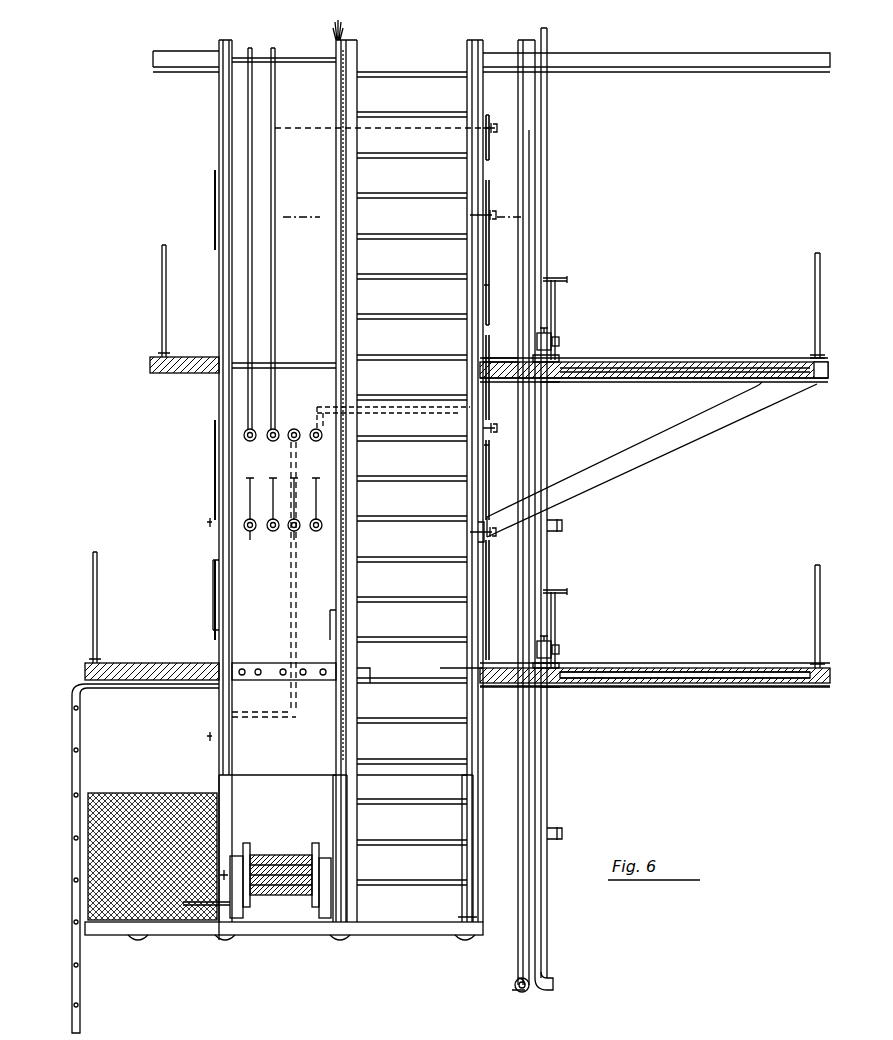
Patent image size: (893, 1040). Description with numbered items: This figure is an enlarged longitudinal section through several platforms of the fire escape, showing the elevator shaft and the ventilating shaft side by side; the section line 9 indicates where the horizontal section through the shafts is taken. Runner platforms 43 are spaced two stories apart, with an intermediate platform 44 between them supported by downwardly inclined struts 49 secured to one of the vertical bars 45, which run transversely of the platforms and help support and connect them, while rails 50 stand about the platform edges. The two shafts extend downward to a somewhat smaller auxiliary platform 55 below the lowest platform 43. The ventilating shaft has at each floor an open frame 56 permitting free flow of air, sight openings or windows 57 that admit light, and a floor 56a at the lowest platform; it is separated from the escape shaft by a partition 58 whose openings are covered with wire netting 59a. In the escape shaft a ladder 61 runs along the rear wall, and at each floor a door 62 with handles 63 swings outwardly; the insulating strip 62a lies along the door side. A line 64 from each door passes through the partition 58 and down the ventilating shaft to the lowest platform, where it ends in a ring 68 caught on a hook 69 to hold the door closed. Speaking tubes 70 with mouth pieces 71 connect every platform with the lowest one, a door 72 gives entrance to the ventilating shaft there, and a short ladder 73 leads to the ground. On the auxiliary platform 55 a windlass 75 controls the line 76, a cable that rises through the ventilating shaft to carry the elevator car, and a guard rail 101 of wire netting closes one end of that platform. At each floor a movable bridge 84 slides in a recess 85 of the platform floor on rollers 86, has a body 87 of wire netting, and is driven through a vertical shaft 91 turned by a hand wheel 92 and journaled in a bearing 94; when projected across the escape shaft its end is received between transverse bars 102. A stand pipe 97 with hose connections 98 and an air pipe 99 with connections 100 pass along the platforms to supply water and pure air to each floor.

The section line 9 is at (399, 183).
The runner platform 43 is at (724, 60).
The intermediate platform 44 is at (745, 368).
The vertical bar 45 is at (233, 787).
The downwardly inclined strut 49 is at (667, 443).
The rail 50 is at (821, 290).
The auxiliary platform 55 is at (318, 936).
The open frame 56 is at (296, 364).
The floor 56a is at (256, 663).
The sight opening 57 is at (220, 217).
The partition 58 is at (355, 350).
The wire netting 59a is at (350, 263).
The ladder 61 is at (478, 533).
The door 62 is at (485, 175).
The insulating strip section 62a is at (486, 302).
The handle 63 is at (489, 209).
The line 64 is at (246, 481).
The ring 68 is at (244, 522).
The hook 69 is at (250, 532).
The speaking tube 70 is at (254, 166).
The mouth piece 71 is at (493, 126).
The door 72 is at (216, 574).
The short ladder 73 is at (80, 773).
The windlass 75 is at (232, 898).
The line 76 is at (333, 622).
The movable bridge 84 is at (614, 364).
The recess 85 is at (700, 367).
The roller 86 is at (548, 382).
The body 87 is at (503, 360).
The vertical shaft 91 is at (557, 320).
The hand wheel 92 is at (569, 279).
The bearing 94 is at (557, 358).
The stand pipe 97 is at (519, 749).
The connection 98 is at (553, 339).
The air pipe 99 is at (546, 456).
The connection 100 is at (564, 525).
The guard rail 101 is at (130, 805).
The transverse bar 102 is at (372, 682).